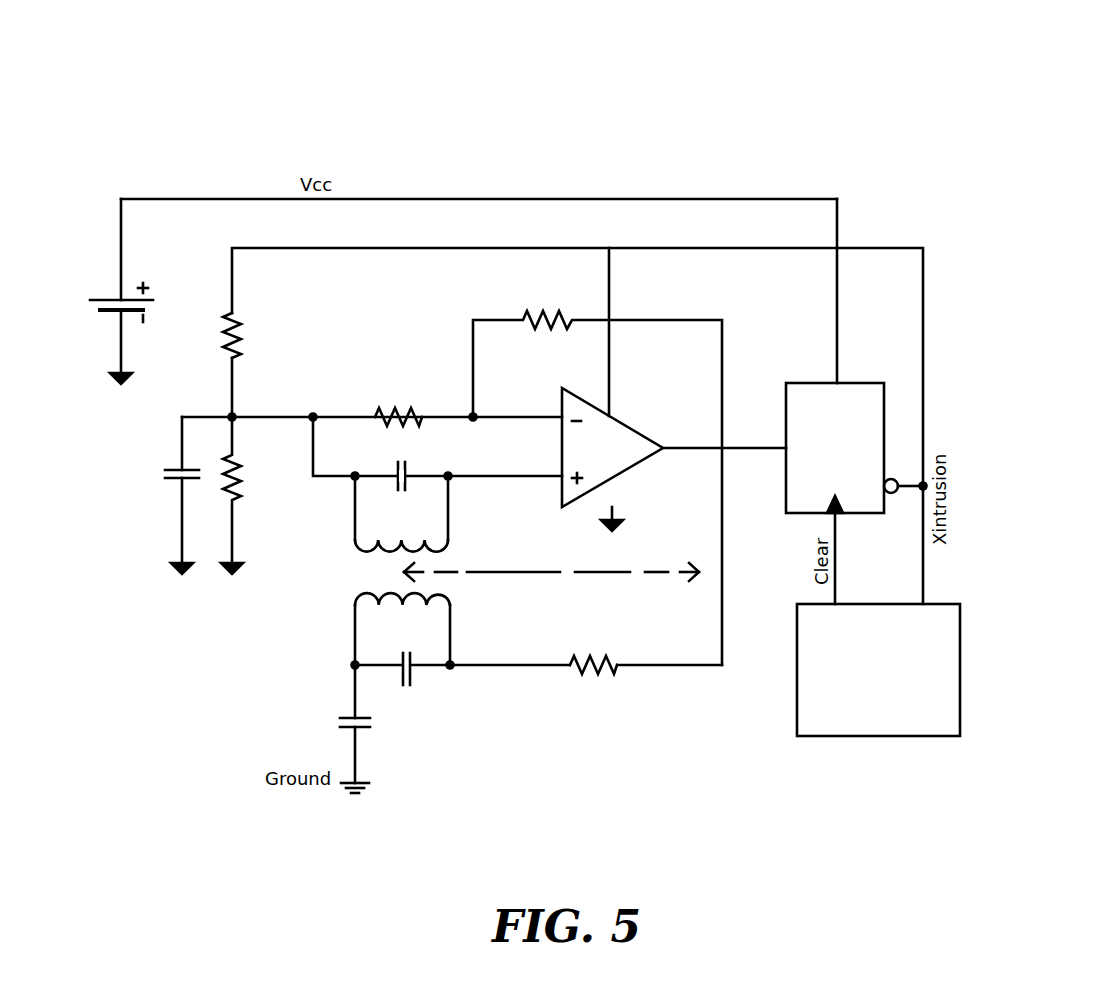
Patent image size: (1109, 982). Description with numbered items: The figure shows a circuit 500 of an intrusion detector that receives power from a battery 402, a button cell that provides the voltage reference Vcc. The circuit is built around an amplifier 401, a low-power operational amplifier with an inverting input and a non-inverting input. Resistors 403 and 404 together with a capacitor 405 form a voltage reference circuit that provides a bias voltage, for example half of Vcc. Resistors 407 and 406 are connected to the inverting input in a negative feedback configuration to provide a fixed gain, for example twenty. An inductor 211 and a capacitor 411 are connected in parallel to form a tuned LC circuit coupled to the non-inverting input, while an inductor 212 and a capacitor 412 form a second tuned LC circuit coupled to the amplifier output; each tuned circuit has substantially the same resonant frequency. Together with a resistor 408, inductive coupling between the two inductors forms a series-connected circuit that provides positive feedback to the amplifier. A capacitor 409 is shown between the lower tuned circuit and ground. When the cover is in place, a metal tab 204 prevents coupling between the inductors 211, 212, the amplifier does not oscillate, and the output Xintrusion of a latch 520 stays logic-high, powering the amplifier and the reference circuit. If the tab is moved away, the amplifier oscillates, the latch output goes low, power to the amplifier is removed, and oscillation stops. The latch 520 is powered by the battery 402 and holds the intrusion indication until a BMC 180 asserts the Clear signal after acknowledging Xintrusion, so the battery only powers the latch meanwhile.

The circuit 500 is at (830, 88).
The battery 402 is at (96, 329).
The resistor 403 is at (263, 364).
The resistor 404 is at (262, 495).
The capacitor 405 is at (153, 495).
The resistor 406 is at (419, 402).
The resistor 407 is at (597, 472).
The capacitor 411 is at (437, 468).
The amplifier 401 is at (674, 459).
The inductor 211 is at (370, 529).
The inductor 212 is at (373, 625).
The metal tab 204 is at (551, 582).
The capacitor 412 is at (444, 684).
The resistor 408 is at (619, 683).
The capacitor 409 is at (327, 729).
The latch 520 is at (834, 428).
The BMC 180 is at (858, 688).